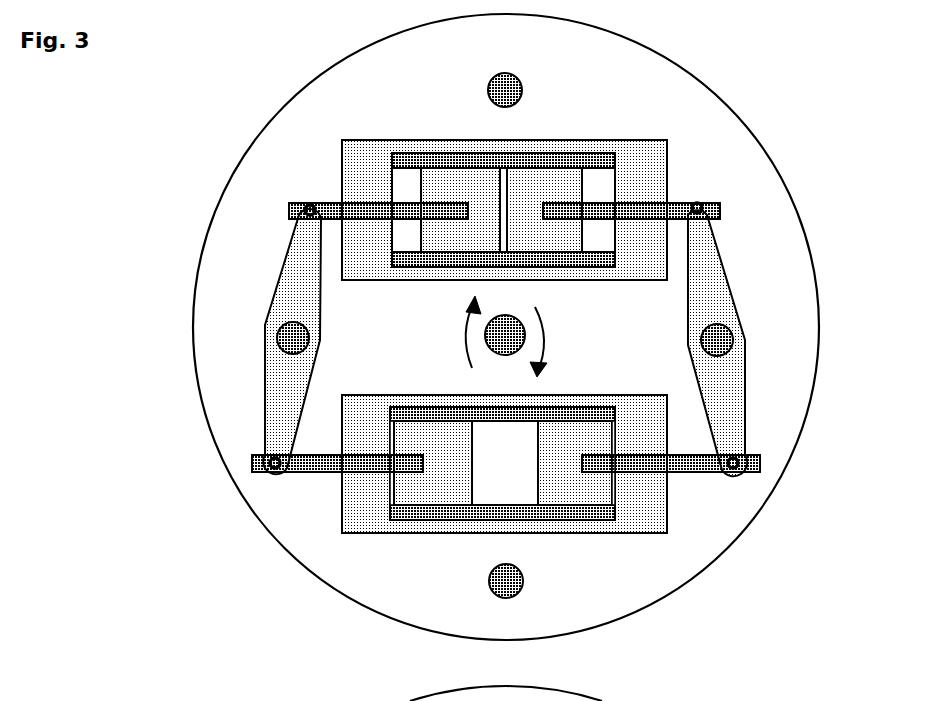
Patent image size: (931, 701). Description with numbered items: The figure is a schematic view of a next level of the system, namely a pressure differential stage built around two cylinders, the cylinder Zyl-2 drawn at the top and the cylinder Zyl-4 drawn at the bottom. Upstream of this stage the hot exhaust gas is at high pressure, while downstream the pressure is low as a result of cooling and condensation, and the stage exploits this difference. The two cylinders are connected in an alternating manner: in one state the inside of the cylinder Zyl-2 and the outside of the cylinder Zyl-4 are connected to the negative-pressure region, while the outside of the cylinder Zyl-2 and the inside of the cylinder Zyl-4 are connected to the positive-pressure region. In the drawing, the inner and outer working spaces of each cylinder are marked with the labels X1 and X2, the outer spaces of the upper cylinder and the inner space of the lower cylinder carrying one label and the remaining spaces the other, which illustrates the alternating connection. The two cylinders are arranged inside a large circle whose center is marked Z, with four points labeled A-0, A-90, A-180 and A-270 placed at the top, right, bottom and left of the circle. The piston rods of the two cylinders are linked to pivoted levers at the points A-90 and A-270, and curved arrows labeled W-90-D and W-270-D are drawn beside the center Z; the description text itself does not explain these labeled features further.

The cylinder Zyl-2 is at (504, 192).
The cylinder Zyl-4 is at (506, 483).
The first cylinder chamber X1 is at (503, 338).
The second cylinder chamber X2 is at (504, 322).
The articulation point at 0 degrees A-0 is at (510, 103).
The articulation point at 90 degrees A-90 is at (748, 339).
The articulation point at 180 degrees A-180 is at (503, 596).
The articulation point at 270 degrees A-270 is at (262, 339).
The central rotation axis Z is at (505, 351).
The rotation direction at 90 degrees W-90-D is at (601, 342).
The rotation direction at 270 degrees W-270-D is at (406, 332).